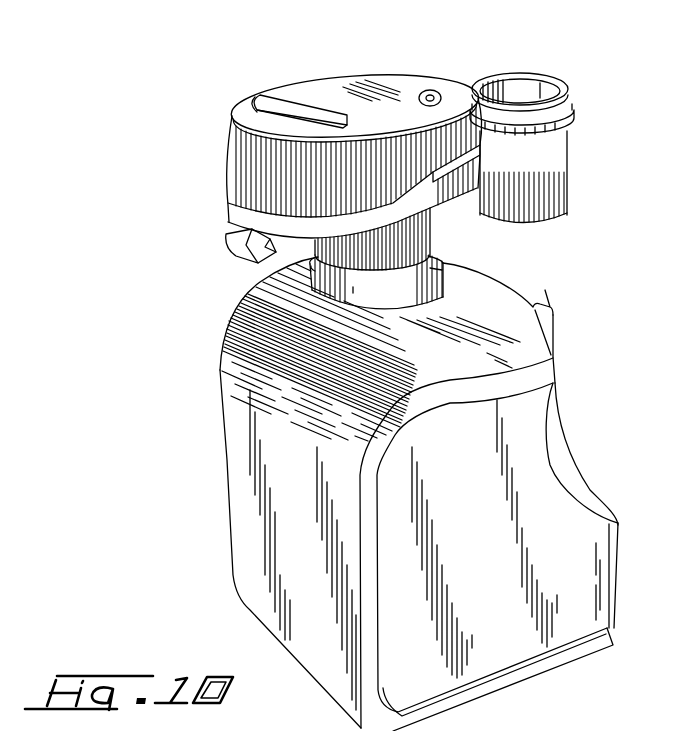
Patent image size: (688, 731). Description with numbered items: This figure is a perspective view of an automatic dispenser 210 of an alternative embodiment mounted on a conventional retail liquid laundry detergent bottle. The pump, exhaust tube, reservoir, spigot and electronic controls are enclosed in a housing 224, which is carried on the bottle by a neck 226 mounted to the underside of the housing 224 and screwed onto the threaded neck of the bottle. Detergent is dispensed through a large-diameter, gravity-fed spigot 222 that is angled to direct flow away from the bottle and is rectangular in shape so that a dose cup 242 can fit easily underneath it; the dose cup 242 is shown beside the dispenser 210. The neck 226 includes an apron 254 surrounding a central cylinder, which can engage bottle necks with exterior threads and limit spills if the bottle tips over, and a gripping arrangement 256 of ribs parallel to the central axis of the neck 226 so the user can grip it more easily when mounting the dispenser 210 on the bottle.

The automatic dispenser 210 is at (437, 63).
The spigot 222 is at (228, 233).
The housing 224 is at (343, 90).
The neck 226 is at (250, 290).
The dose cup 242 is at (540, 78).
The apron 254 is at (447, 262).
The gripping arrangement 256 is at (432, 246).